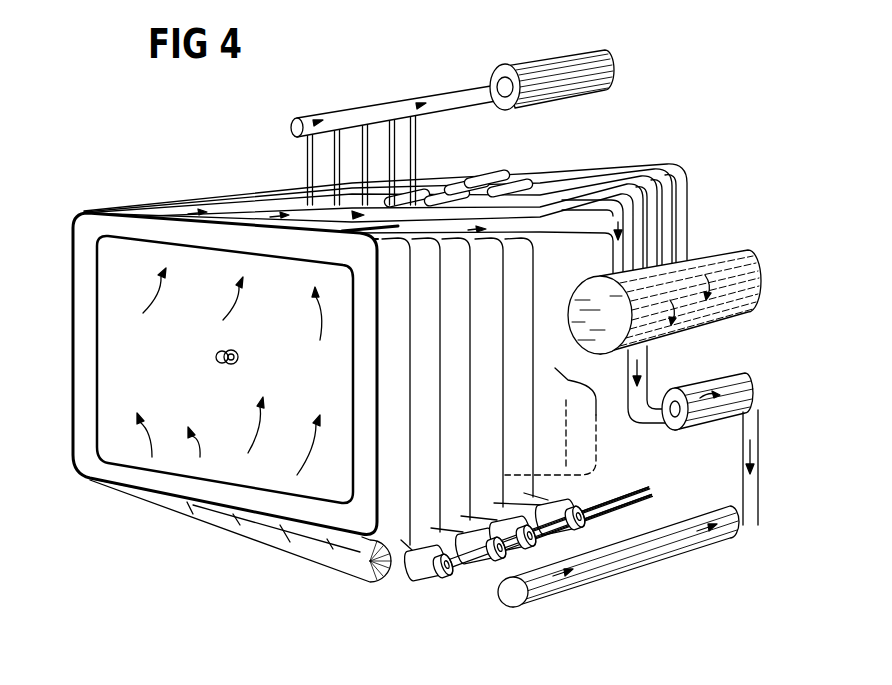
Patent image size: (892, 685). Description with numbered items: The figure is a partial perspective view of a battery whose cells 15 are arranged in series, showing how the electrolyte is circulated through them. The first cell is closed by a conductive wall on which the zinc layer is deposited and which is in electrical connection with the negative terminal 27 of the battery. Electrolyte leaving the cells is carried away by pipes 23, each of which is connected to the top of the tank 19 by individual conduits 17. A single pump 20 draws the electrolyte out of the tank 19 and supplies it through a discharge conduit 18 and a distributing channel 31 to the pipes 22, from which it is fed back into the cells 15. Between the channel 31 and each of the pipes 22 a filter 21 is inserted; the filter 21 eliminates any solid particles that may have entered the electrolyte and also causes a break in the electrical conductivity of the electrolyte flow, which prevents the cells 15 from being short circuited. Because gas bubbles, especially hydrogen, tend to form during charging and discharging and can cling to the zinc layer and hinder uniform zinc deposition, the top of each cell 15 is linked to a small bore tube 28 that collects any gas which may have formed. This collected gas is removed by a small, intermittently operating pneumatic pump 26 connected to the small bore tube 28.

The cells 15 is at (388, 437).
The individual conduits 17 is at (684, 195).
The discharge conduit 18 is at (752, 522).
The tank 19 is at (707, 265).
The pump 20 is at (700, 428).
The filter 21 is at (413, 578).
The pipes 22 is at (343, 572).
The pipes 23 is at (480, 183).
The pneumatic pump 26 is at (553, 73).
The negative terminal 27 is at (216, 354).
The small bore tube 28 is at (310, 158).
The distributing channel 31 is at (633, 553).